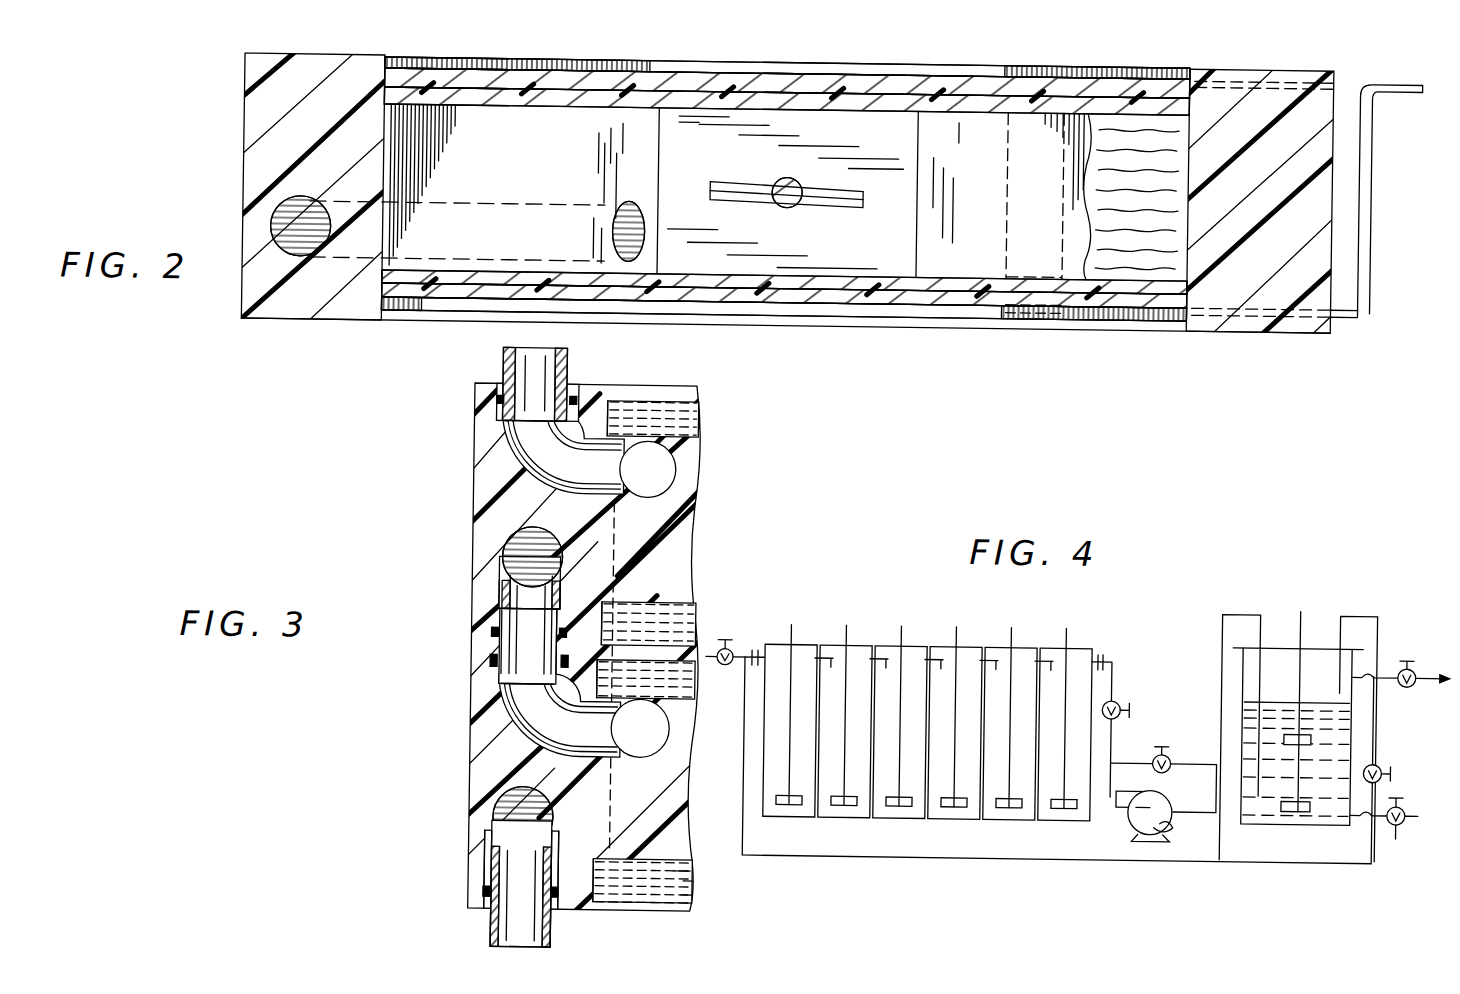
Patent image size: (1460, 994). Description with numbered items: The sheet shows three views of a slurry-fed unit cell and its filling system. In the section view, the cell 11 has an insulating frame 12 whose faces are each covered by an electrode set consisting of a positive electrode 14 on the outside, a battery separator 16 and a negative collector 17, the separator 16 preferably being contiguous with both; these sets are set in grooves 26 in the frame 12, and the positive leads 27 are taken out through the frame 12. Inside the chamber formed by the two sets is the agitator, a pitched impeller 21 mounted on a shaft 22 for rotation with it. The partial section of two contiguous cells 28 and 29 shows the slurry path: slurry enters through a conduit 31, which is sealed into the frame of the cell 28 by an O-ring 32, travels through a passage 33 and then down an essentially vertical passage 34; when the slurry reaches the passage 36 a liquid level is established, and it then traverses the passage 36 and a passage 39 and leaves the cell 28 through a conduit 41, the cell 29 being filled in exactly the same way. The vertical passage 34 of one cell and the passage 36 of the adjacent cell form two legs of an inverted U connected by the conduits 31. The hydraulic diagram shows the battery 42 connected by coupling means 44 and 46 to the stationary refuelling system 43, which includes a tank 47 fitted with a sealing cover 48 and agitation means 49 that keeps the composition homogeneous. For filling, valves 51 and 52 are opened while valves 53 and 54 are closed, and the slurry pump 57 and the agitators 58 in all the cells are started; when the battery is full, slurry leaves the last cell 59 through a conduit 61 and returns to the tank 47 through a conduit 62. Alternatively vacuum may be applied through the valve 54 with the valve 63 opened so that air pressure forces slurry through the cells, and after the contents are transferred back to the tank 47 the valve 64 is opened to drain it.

In FIG. 2, the cell 11 is at (1291, 338).
In FIG. 2, the frame 12 is at (258, 164).
In FIG. 2, the positive electrode 14 is at (866, 82).
In FIG. 3, the positive electrode 14 is at (697, 892).
In FIG. 2, the battery separator 16 is at (782, 87).
In FIG. 3, the battery separator 16 is at (707, 877).
In FIG. 2, the negative collector 17 is at (604, 90).
In FIG. 3, the negative collector 17 is at (689, 870).
In FIG. 2, the pitched impeller 21 is at (742, 195).
In FIG. 2, the shaft 22 is at (800, 165).
In FIG. 2, the grooves 26 is at (388, 62).
In FIG. 2, the positive leads 27 is at (1361, 70).
In FIG. 3, the cell 28 is at (474, 753).
In FIG. 3, the cell 29 is at (476, 512).
In FIG. 3, the conduit 31 is at (558, 925).
In FIG. 3, the O-ring 32 is at (493, 658).
In FIG. 3, the passage 33 is at (570, 584).
In FIG. 2, the vertical passage 34 is at (601, 212).
In FIG. 3, the vertical passage 34 is at (528, 556).
In FIG. 3, the passage 36 is at (662, 467).
In FIG. 3, the passage 39 is at (673, 614).
In FIG. 3, the conduit 41 is at (474, 672).
In FIG. 4, the battery 42 is at (1093, 812).
In FIG. 4, the refuelling system 43 is at (1367, 651).
In FIG. 4, the coupling means 44 is at (1105, 652).
In FIG. 4, the coupling means 46 is at (755, 650).
In FIG. 4, the tank 47 is at (1352, 718).
In FIG. 4, the sealing cover 48 is at (1277, 641).
In FIG. 4, the agitation means 49 is at (1306, 622).
In FIG. 4, the valve 51 is at (1121, 700).
In FIG. 4, the valve 52 is at (1384, 760).
In FIG. 4, the valve 53 is at (1171, 754).
In FIG. 4, the valve 54 is at (718, 665).
In FIG. 4, the slurry pump 57 is at (1166, 824).
In FIG. 4, the agitators 58 is at (790, 760).
In FIG. 4, the last cell 59 is at (764, 790).
In FIG. 4, the conduit 61 is at (747, 655).
In FIG. 4, the conduit 62 is at (1238, 855).
In FIG. 4, the valve 63 is at (1414, 662).
In FIG. 4, the valve 64 is at (1405, 820).